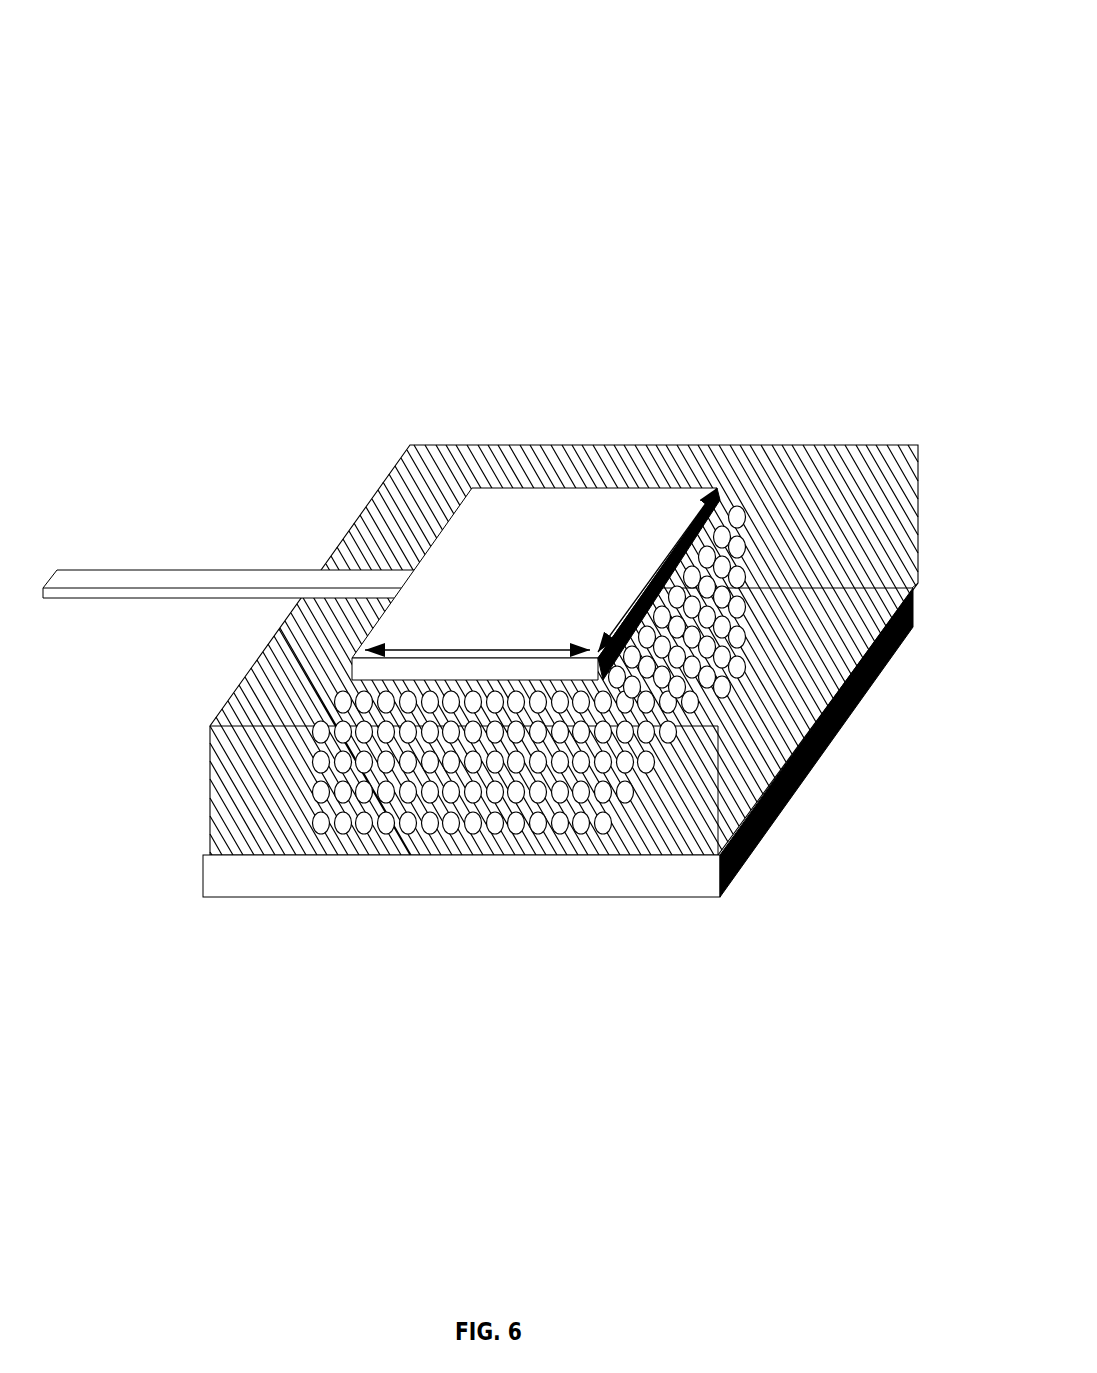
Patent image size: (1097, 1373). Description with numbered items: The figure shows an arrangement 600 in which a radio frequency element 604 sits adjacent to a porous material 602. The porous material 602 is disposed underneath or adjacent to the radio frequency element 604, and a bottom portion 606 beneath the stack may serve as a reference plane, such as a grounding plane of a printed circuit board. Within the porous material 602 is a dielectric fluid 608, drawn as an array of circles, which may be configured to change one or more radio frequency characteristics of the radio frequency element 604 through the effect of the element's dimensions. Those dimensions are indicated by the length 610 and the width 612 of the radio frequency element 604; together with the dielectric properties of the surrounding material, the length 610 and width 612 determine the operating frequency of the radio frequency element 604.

The arrangement 600 is at (877, 72).
The porous material 602 is at (405, 450).
The radio frequency element 604 is at (588, 520).
The bottom portion 606 is at (511, 882).
The dielectric fluid 608 is at (318, 758).
The length 610 is at (493, 642).
The width 612 is at (630, 590).